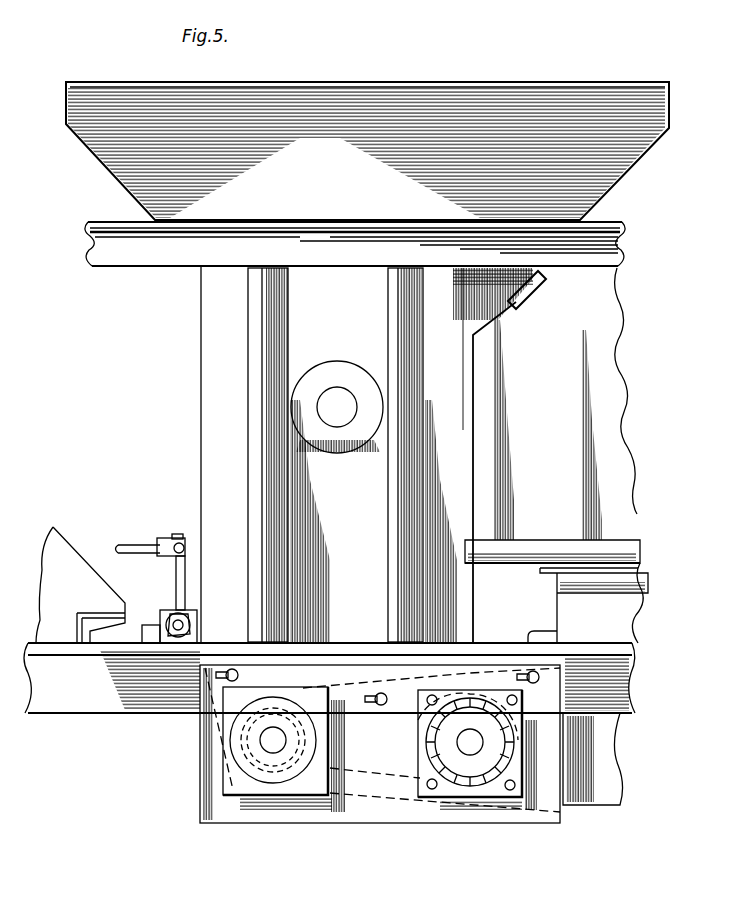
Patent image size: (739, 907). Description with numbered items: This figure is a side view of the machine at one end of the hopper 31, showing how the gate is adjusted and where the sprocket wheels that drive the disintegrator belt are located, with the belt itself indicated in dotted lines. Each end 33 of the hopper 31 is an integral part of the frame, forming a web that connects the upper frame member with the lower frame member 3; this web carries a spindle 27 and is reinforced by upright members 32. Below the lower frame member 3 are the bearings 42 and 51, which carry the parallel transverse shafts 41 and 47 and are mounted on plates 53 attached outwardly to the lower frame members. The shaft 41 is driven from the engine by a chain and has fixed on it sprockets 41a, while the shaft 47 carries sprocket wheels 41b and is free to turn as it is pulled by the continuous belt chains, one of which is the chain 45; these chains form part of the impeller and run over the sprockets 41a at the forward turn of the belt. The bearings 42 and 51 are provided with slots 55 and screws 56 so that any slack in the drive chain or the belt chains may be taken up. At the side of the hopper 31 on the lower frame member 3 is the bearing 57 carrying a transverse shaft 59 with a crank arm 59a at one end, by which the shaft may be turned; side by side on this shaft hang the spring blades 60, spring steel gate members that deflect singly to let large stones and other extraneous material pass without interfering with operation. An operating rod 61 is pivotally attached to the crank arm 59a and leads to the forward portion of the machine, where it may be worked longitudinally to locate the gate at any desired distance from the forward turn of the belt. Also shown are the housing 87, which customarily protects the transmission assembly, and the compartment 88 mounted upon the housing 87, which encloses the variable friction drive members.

The lower frame member 3 is at (70, 692).
The spindle 27 is at (337, 404).
The hopper 31 is at (440, 90).
The upright members 32 is at (262, 376).
The hopper end 33 is at (215, 456).
The transverse shaft 41 is at (276, 745).
The sprockets 41a is at (228, 780).
The sprocket wheels 41b is at (468, 739).
The bearings 42 is at (225, 800).
The chain 45 is at (345, 745).
The transverse shaft 47 is at (473, 748).
The bearings 51 is at (447, 793).
The plates 53 is at (392, 812).
The slots 55 is at (428, 704).
The screws 56 is at (517, 701).
The bearing 57 is at (158, 634).
The transverse shaft 59 is at (180, 628).
The crank arm 59a is at (177, 592).
The spring blades 60 is at (215, 660).
The operating rod 61 is at (138, 547).
The housing 87 is at (623, 628).
The compartment 88 is at (585, 387).